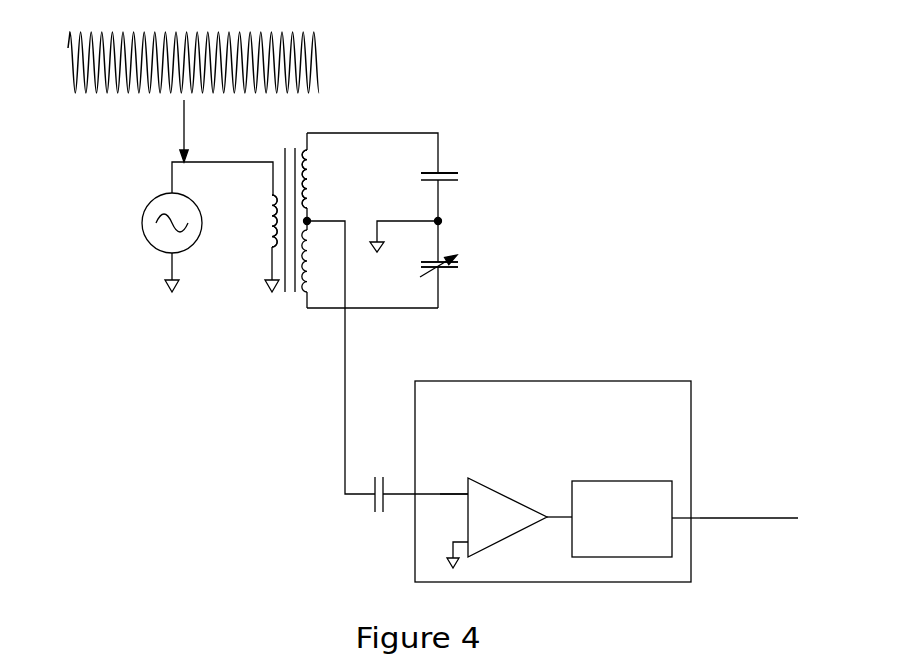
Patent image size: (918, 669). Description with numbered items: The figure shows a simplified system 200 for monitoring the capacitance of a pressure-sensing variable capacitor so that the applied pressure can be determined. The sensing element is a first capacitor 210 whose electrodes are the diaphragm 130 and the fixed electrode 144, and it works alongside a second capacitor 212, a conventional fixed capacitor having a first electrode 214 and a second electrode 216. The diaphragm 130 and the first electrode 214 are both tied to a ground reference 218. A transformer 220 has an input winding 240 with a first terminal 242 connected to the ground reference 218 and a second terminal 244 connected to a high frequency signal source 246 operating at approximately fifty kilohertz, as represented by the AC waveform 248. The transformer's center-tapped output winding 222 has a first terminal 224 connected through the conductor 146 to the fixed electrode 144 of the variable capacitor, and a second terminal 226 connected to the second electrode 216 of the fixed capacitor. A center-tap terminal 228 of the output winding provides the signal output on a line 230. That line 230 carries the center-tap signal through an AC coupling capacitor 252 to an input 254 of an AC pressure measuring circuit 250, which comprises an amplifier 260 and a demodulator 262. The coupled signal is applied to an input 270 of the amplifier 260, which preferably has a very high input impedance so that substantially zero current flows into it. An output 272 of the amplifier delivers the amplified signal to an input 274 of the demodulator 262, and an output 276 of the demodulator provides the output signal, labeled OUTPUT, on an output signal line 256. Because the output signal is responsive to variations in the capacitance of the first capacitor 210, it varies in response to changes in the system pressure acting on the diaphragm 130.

The AC waveform 248 is at (328, 65).
The system 200 is at (130, 294).
The input winding 240 is at (260, 195).
The high frequency signal source 246 is at (194, 243).
The second terminal 244 is at (272, 195).
The first terminal 242 is at (272, 247).
The ground reference 218 is at (272, 280).
The transformer 220 is at (290, 300).
The second terminal 226 is at (307, 150).
The output winding 222 is at (313, 187).
The first terminal 224 is at (306, 300).
The center-tap terminal 228 is at (307, 221).
The second electrode 216 is at (438, 170).
The first electrode 214 is at (443, 181).
The second capacitor 212 is at (465, 170).
The fixed electrode 144 is at (445, 269).
The diaphragm 130 is at (434, 261).
The first capacitor 210 is at (465, 258).
The conductor 146 is at (395, 308).
The line 230 is at (345, 360).
The AC pressure measuring circuit 250 is at (590, 381).
The AC coupling capacitor 252 is at (375, 486).
The input 254 is at (410, 496).
The amplifier 260 is at (510, 499).
The input 270 is at (466, 494).
The output 272 is at (540, 521).
The input 274 is at (567, 517).
The demodulator 262 is at (598, 481).
The output 276 is at (675, 517).
The output signal line 256 is at (765, 519).